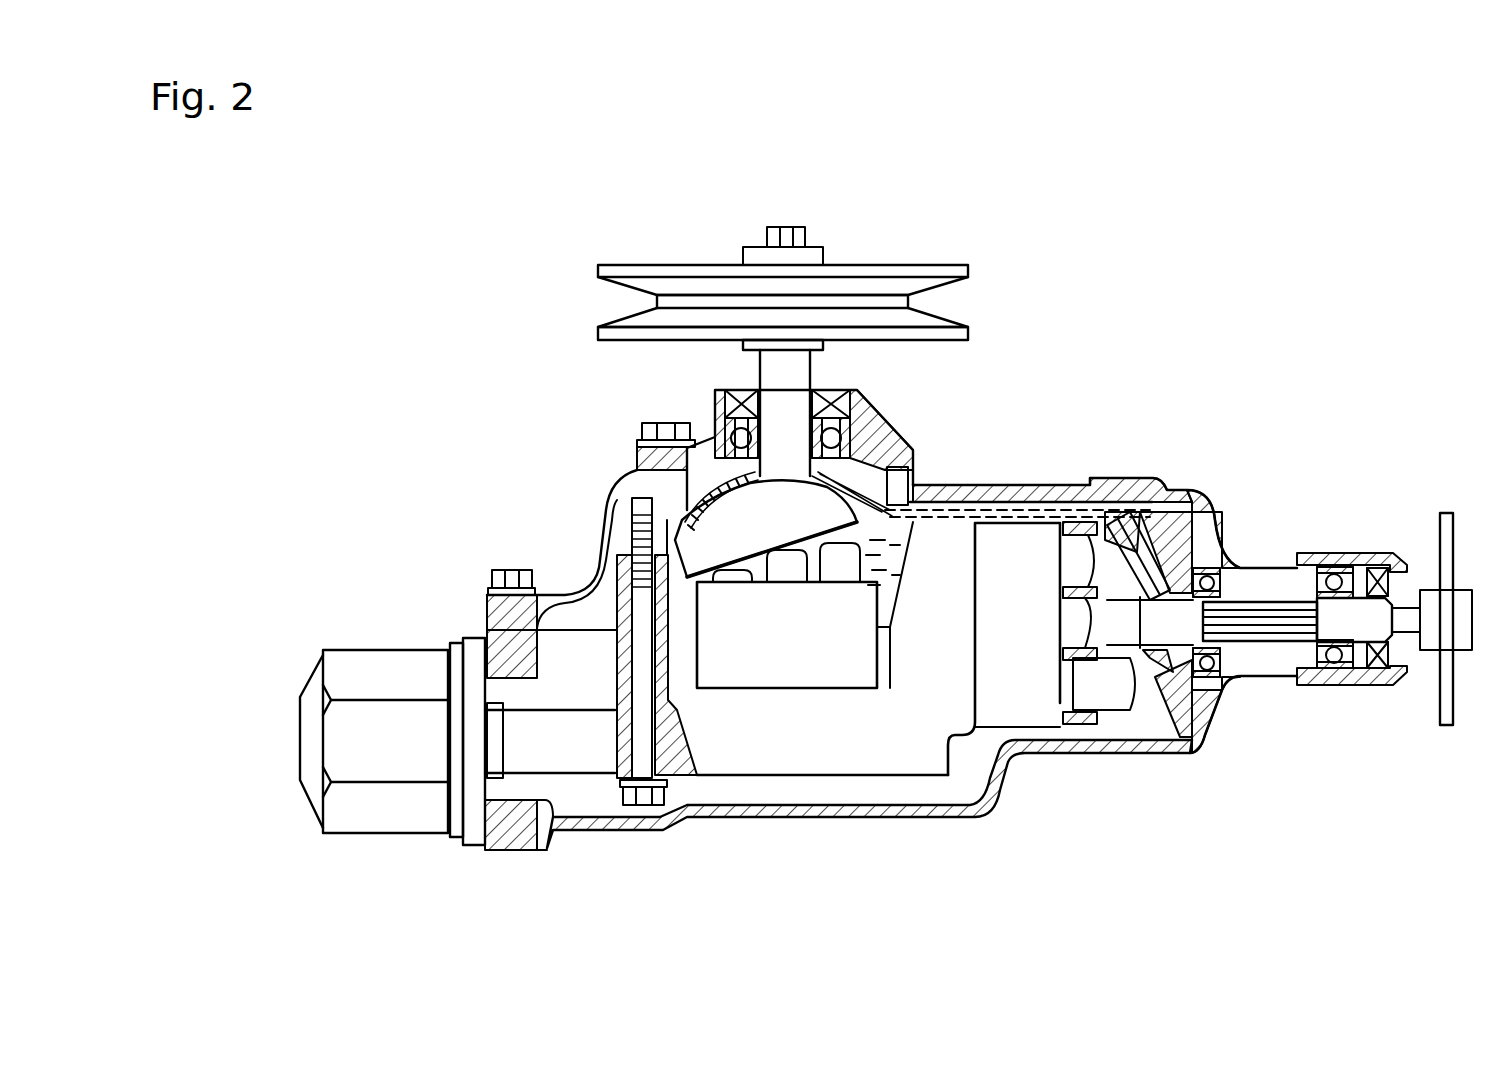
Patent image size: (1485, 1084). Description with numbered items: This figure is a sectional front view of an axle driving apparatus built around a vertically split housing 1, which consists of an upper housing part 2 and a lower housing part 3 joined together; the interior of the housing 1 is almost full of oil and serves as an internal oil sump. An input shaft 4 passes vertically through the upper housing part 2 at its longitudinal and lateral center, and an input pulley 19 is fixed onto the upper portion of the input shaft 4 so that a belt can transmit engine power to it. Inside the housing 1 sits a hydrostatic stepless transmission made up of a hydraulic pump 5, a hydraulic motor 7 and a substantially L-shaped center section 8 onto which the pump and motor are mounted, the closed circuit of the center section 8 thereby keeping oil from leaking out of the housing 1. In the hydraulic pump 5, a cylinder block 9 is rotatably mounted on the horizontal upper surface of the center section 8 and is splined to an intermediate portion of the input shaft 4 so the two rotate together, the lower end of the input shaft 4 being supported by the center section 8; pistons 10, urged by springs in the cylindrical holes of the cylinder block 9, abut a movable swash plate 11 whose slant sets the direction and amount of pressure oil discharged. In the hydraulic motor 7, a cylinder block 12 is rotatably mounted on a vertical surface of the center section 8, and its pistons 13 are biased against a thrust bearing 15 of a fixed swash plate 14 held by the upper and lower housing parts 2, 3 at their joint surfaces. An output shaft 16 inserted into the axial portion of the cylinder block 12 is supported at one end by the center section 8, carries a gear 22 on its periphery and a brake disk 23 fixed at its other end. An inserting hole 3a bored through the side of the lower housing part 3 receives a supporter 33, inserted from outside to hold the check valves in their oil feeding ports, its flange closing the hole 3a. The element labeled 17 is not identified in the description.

The housing 1 is at (1152, 355).
The upper housing part 2 is at (1000, 495).
The lower housing part 3 is at (891, 822).
The inserting hole 3a is at (483, 683).
The input shaft 4 is at (785, 233).
The hydraulic pump 5 is at (692, 607).
The hydraulic motor 7 is at (1052, 738).
The center section 8 is at (886, 755).
The cylinder block 9 is at (792, 661).
The pistons 10 is at (895, 560).
The movable swash plate 11 is at (717, 537).
The cylinder block 12 is at (1044, 684).
The pistons 13 is at (1104, 700).
The fixed swash plate 14 is at (1172, 697).
The thrust bearing 15 is at (1180, 540).
The output shaft 16 is at (1362, 615).
The nut 17 is at (347, 660).
The input pulley 19 is at (945, 266).
The gear 22 is at (1272, 636).
The brake disk 23 is at (1445, 698).
The supporter 33 is at (575, 753).